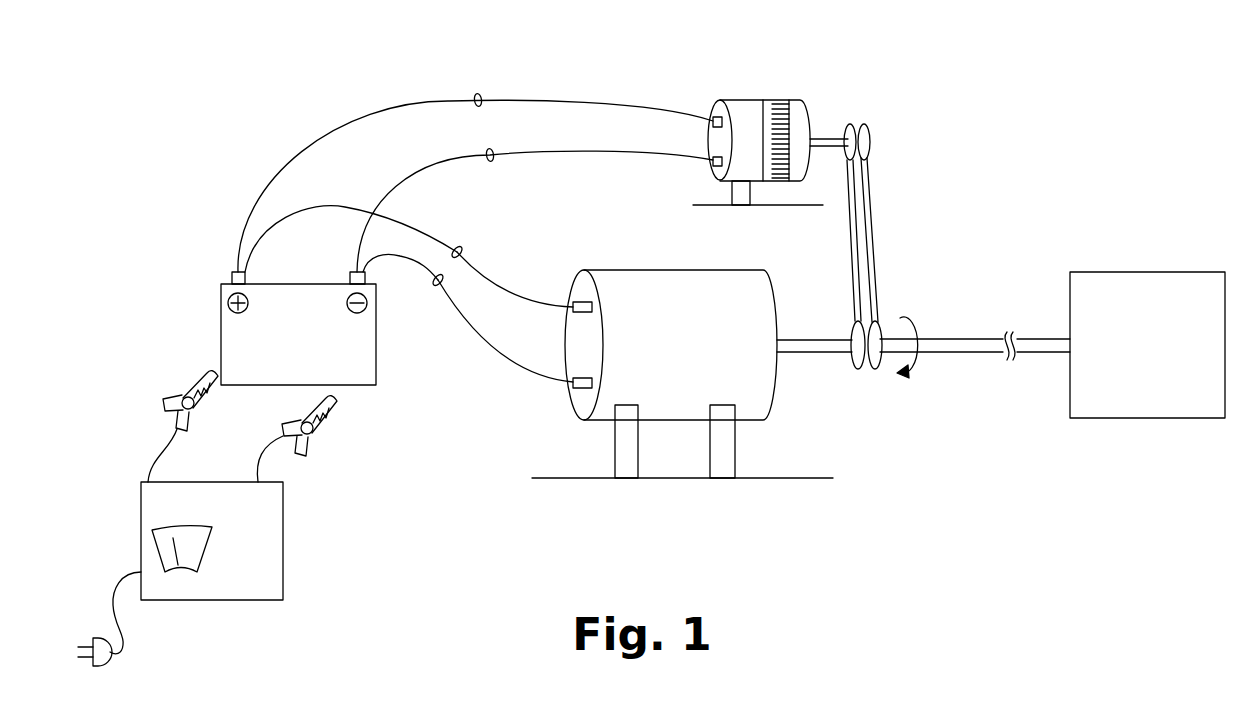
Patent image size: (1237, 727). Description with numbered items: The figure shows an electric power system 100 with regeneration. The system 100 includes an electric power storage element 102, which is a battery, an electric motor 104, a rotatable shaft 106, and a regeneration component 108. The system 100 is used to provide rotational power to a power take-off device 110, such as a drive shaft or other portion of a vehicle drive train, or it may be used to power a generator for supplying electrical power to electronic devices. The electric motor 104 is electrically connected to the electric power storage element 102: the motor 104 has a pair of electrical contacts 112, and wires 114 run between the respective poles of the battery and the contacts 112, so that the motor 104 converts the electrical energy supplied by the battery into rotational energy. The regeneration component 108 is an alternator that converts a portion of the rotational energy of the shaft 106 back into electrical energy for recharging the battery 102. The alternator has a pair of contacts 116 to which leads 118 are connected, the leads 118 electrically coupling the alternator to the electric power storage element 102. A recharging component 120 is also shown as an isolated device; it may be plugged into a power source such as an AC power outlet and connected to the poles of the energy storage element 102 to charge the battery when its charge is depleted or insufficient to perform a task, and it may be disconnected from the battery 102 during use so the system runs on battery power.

The electric power system 100 is at (963, 115).
The electric power storage element 102 is at (284, 345).
The electric motor 104 is at (668, 355).
The rotatable shaft 106 is at (965, 358).
The regeneration component 108 is at (742, 100).
The power take-off device 110 is at (1133, 357).
The electrical contacts 112 is at (580, 300).
The wires 114 is at (438, 286).
The contacts 116 is at (712, 120).
The leads 118 is at (490, 150).
The recharging component 120 is at (283, 543).